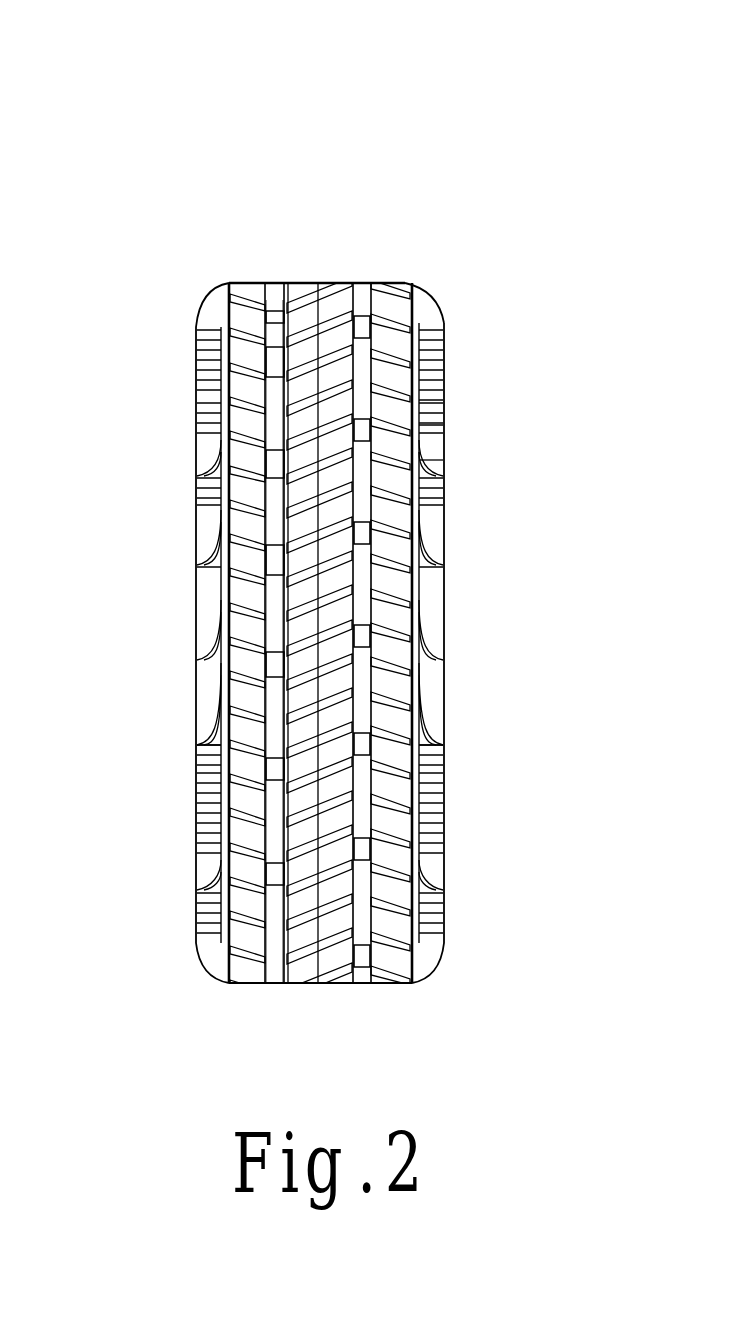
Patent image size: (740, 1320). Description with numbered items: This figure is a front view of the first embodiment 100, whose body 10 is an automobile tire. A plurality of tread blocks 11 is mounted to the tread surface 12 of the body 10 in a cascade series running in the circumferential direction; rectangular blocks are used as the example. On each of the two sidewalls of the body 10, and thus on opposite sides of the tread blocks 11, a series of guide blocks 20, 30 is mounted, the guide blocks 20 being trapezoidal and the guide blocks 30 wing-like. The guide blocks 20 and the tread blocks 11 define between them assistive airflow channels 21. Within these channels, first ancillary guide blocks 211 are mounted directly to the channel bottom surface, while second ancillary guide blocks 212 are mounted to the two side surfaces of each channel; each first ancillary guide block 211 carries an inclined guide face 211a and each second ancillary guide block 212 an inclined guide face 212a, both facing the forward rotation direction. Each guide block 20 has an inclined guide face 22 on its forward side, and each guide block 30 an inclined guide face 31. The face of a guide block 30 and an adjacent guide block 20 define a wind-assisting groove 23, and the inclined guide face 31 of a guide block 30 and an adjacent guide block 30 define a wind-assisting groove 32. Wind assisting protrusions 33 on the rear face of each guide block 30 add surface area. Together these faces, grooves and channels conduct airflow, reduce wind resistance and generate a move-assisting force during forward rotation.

The first embodiment 100 is at (498, 158).
The body 10 is at (418, 310).
The tread blocks 11 is at (340, 300).
The tread surface 12 is at (373, 982).
The guide blocks 20 is at (446, 509).
The assistive airflow channels 21 is at (362, 300).
The first ancillary guide blocks 211 is at (450, 833).
The inclined guide face 211a is at (445, 800).
The second ancillary guide blocks 212 is at (362, 690).
The inclined guide face 212a is at (370, 735).
The inclined guide face 22 is at (441, 500).
The wind-assisting groove 23 is at (447, 478).
The guide blocks 30 is at (442, 618).
The inclined guide face 31 is at (445, 640).
The wind-assisting groove 32 is at (445, 600).
The wind assisting protrusions 33 is at (205, 486).